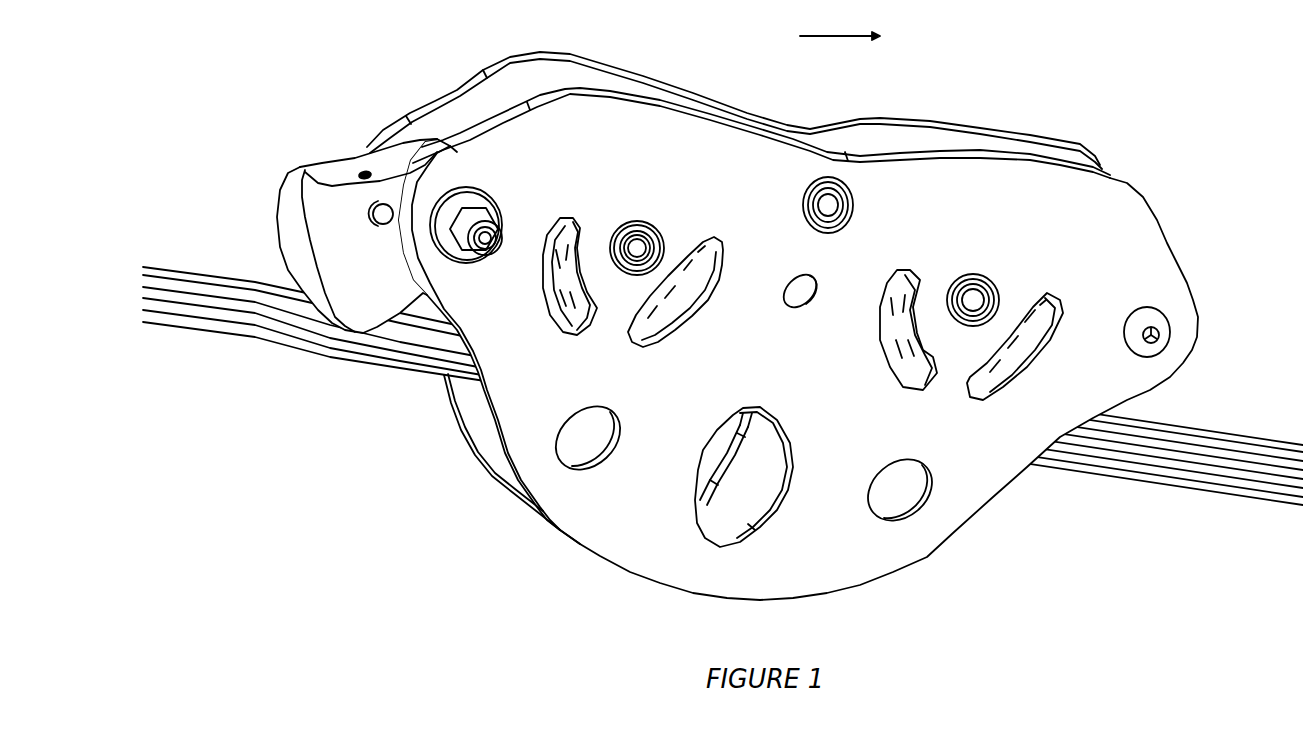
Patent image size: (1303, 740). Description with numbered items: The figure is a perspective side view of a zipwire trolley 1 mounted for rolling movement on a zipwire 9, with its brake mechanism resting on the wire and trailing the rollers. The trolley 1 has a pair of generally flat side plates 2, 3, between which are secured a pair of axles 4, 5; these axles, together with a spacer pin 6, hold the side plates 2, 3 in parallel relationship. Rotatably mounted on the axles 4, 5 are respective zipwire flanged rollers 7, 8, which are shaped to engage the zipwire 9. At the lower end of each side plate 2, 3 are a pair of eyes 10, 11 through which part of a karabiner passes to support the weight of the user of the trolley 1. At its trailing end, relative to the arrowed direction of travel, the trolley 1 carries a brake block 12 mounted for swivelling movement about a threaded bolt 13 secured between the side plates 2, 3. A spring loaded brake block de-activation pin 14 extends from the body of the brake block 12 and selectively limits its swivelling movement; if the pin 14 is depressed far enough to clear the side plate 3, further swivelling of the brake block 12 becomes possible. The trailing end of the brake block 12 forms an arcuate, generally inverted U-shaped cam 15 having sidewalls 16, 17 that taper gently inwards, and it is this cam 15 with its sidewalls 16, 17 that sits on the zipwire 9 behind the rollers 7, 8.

The zipwire trolley 1 is at (930, 65).
The side plate 2 is at (744, 115).
The side plate 3 is at (798, 346).
The axle 4 is at (654, 246).
The axle 5 is at (994, 294).
The spacer pin 6 is at (847, 205).
The zipwire flanged roller 7 is at (675, 320).
The zipwire flanged roller 8 is at (1001, 368).
The zipwire 9 is at (723, 417).
The eye 10 is at (740, 459).
The eye 11 is at (749, 485).
The brake block 12 is at (321, 258).
The threaded bolt 13 is at (474, 250).
The brake block de-activation pin 14 is at (374, 244).
The cam 15 is at (301, 155).
The sidewall 16 is at (274, 250).
The sidewall 17 is at (321, 372).